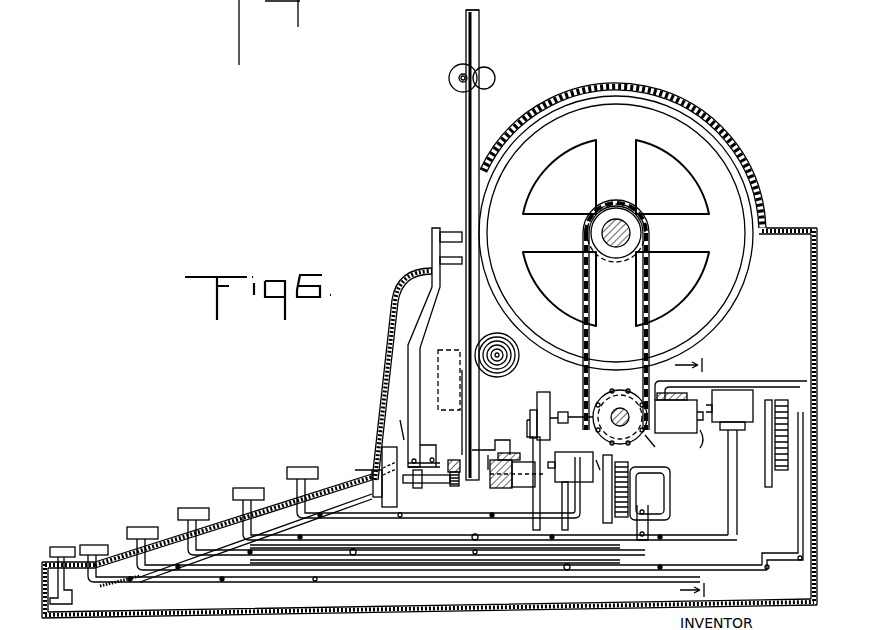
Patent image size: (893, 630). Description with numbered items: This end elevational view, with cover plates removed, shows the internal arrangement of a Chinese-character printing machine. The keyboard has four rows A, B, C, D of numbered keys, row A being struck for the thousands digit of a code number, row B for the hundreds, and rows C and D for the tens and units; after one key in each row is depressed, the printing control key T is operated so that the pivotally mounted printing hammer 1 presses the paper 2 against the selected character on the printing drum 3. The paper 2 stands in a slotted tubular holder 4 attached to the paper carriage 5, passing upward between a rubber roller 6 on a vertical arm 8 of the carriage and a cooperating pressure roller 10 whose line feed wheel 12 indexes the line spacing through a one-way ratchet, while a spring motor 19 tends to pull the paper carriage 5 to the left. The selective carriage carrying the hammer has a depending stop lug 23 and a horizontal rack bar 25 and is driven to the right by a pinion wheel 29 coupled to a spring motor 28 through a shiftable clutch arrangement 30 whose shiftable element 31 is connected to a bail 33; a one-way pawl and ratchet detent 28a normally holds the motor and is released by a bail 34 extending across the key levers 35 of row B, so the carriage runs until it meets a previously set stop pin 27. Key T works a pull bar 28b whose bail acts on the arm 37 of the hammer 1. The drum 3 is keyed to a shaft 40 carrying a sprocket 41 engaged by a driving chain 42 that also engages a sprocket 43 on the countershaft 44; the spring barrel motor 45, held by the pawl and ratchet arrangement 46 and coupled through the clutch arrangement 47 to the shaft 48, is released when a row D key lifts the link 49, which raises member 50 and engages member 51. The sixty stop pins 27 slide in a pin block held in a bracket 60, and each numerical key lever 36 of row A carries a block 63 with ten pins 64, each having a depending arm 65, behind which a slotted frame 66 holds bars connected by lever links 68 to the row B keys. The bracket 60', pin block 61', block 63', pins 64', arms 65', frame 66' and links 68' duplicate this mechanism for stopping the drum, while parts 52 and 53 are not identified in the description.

The printing hammer 1 is at (444, 232).
The paper 2 is at (466, 16).
The printing drum 3 is at (650, 117).
The tubular holder 4 is at (507, 372).
The paper carriage 5 is at (479, 62).
The rubber roller 6 is at (495, 76).
The vertical arm 8 is at (683, 478).
The pressure roller 10 is at (458, 86).
The line feed wheel 12 is at (457, 67).
The spring motor 19 is at (455, 358).
The stop lug 23 is at (488, 477).
The rack bar 25 is at (456, 488).
The stop pins 27 is at (517, 487).
The spring motor 28 is at (389, 447).
The one-way pawl and ratchet detent 28a is at (368, 468).
The pull bar 28b is at (120, 586).
The pinion wheel 29 is at (404, 440).
The shiftable clutch arrangement 30 is at (418, 474).
The shiftable clutch element 31 is at (432, 455).
The bail 33 is at (420, 488).
The bail 34 is at (371, 488).
The key levers 35 is at (338, 545).
The numerical key lever 36 is at (527, 483).
The hammer arm 37 is at (408, 420).
The shaft 40 is at (628, 222).
The sprocket 41 is at (596, 210).
The driving chain 42 is at (650, 287).
The sprocket 43 is at (600, 395).
The countershaft 44 is at (622, 408).
The spring barrel motor 45 is at (544, 392).
The release control pawl and ratchet arrangement 46 is at (530, 412).
The clutch arrangement 47 is at (563, 412).
The shaft 48 is at (575, 424).
The link 49 is at (492, 565).
The release member 50 is at (527, 432).
The clutch member 51 is at (562, 504).
The pawl 52 is at (644, 449).
The spring 53 is at (599, 465).
The bracket 60 is at (505, 463).
The bracket 60' is at (731, 381).
The pin block 61' is at (679, 424).
The block 63 is at (575, 482).
The block 63' is at (742, 478).
The pins 64 is at (549, 456).
The pins 64' is at (729, 422).
The depending arm 65 is at (597, 494).
The depending arm 65' is at (769, 456).
The slotted frame 66 is at (633, 489).
The slotted frame 66' is at (787, 425).
The lever links 68 is at (660, 503).
The lever links 68' is at (781, 491).
The key row A is at (433, 483).
The key row B is at (485, 504).
The key row C is at (411, 522).
The key row D is at (448, 539).
The printing control key T is at (375, 565).